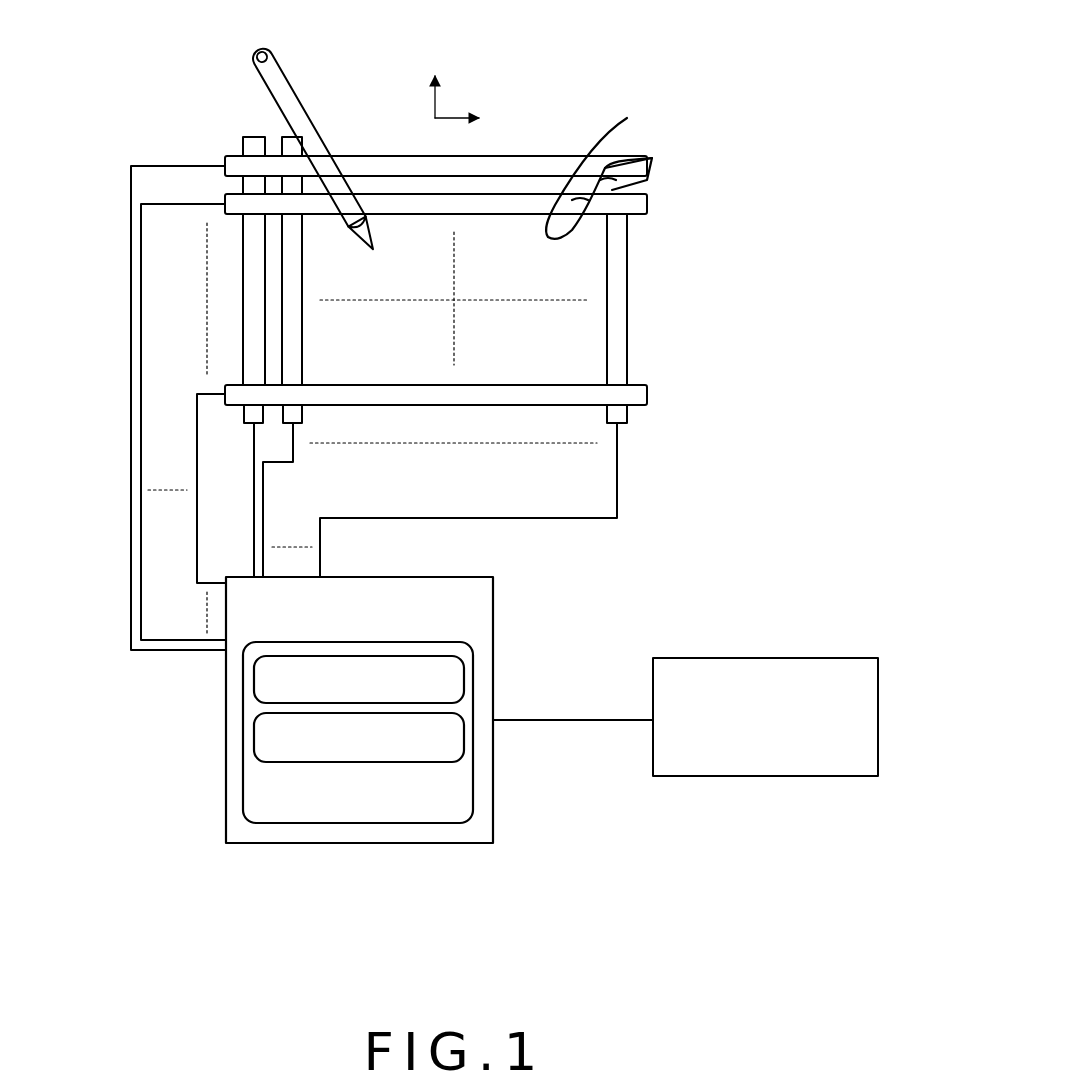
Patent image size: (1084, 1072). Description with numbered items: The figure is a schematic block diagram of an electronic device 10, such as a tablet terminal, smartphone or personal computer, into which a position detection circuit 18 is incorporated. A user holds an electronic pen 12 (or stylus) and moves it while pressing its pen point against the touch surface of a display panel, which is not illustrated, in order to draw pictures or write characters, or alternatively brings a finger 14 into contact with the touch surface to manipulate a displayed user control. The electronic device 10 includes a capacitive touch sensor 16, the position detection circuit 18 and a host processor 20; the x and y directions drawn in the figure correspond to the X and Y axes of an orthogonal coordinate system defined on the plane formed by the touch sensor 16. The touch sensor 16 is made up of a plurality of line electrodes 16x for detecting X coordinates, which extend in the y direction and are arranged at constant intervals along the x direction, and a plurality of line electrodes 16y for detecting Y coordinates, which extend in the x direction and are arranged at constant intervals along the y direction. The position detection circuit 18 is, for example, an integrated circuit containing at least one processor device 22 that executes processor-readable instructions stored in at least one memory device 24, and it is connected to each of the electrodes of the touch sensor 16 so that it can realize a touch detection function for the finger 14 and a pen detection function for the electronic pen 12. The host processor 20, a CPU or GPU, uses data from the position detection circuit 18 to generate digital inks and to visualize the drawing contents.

The electronic device 10 is at (205, 106).
The electronic pen 12 is at (273, 55).
The finger 14 is at (627, 118).
The capacitive touch sensor 16 is at (742, 175).
The line electrodes for detecting Y coordinates 16y is at (647, 205).
The line electrodes for detecting X coordinates 16x is at (620, 243).
The position detection circuit 18 is at (357, 847).
The host processor 20 is at (765, 658).
The processor device 22 is at (254, 678).
The memory device 24 is at (254, 735).